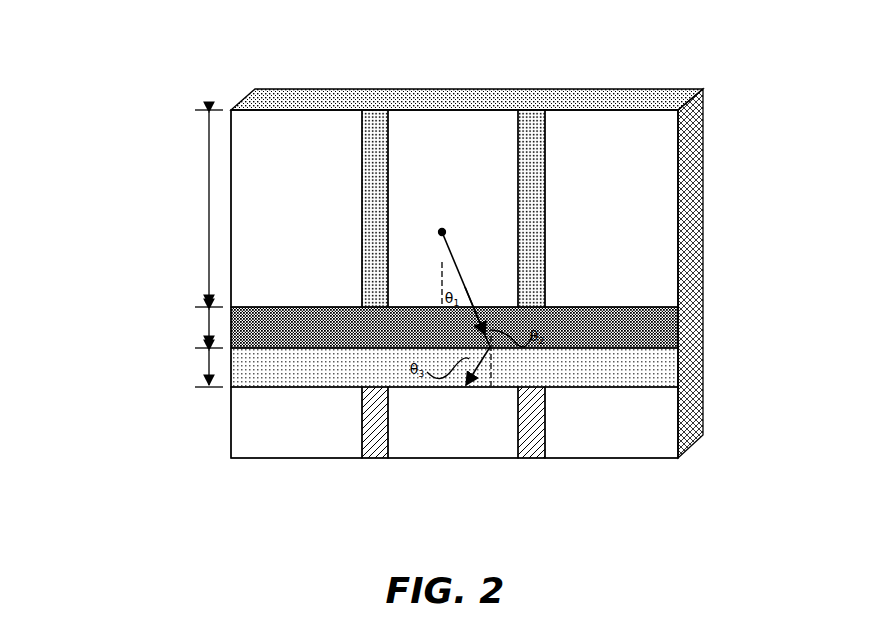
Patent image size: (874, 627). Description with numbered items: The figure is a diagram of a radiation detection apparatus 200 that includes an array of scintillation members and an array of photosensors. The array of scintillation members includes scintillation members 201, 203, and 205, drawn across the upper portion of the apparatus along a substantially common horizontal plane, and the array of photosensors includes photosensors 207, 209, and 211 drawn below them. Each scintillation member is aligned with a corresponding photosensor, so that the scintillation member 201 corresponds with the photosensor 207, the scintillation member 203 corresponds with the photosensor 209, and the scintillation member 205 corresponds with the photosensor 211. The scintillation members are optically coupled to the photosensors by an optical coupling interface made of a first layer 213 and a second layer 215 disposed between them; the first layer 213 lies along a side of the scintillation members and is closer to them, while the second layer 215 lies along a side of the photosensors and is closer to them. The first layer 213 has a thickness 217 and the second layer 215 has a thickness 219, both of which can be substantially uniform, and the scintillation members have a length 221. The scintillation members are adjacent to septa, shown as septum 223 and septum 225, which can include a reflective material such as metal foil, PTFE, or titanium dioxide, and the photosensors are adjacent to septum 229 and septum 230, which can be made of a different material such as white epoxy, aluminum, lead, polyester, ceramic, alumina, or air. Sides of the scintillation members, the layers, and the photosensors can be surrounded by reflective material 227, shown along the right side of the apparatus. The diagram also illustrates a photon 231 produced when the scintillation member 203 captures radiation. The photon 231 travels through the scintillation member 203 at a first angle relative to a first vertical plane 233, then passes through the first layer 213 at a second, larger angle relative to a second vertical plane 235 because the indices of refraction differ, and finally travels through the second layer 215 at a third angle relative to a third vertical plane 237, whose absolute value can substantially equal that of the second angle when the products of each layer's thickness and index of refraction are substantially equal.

The radiation detection apparatus 200 is at (126, 72).
The scintillation member 201 is at (282, 217).
The scintillation member 203 is at (438, 217).
The scintillation member 205 is at (602, 217).
The photosensor 207 is at (282, 429).
The photosensor 209 is at (438, 429).
The photosensor 211 is at (602, 429).
The first layer 213 is at (652, 329).
The second layer 215 is at (652, 356).
The thickness of the first layer 217 is at (205, 322).
The thickness of the second layer 219 is at (205, 369).
The length of the scintillation members 221 is at (207, 175).
The septum 223 is at (373, 136).
The septum 225 is at (529, 136).
The reflective material 227 is at (689, 179).
The septum 229 is at (376, 434).
The septum 230 is at (530, 434).
The photon 231 is at (446, 234).
The first vertical plane 233 is at (440, 249).
The second vertical plane 235 is at (488, 331).
The third vertical plane 237 is at (495, 351).